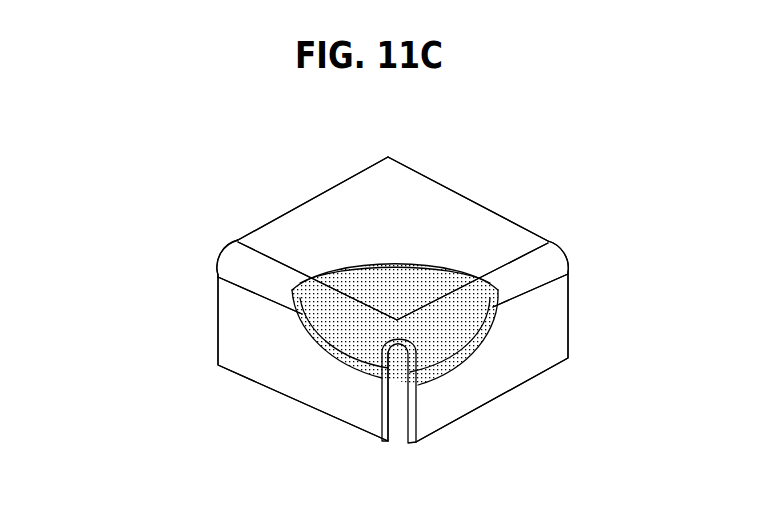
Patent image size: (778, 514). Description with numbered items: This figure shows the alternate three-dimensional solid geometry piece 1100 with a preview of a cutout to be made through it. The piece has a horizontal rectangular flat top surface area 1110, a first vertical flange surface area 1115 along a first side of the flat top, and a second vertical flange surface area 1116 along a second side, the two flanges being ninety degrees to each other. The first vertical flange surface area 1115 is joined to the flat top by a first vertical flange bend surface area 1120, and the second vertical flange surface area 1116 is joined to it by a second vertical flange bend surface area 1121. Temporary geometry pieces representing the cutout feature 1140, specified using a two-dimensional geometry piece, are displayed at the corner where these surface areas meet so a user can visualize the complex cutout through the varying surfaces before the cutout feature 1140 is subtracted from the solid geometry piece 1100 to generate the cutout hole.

The alternate 3-D solid geometry piece 1100 is at (214, 101).
The horizontal rectangular flat top surface area 1110 is at (353, 212).
The first vertical flange bend surface area 1120 is at (243, 263).
The second vertical flange bend surface area 1121 is at (538, 268).
The first vertical flange surface area 1115 is at (240, 338).
The second vertical flange surface area 1116 is at (520, 347).
The cutout feature 1140 is at (460, 377).